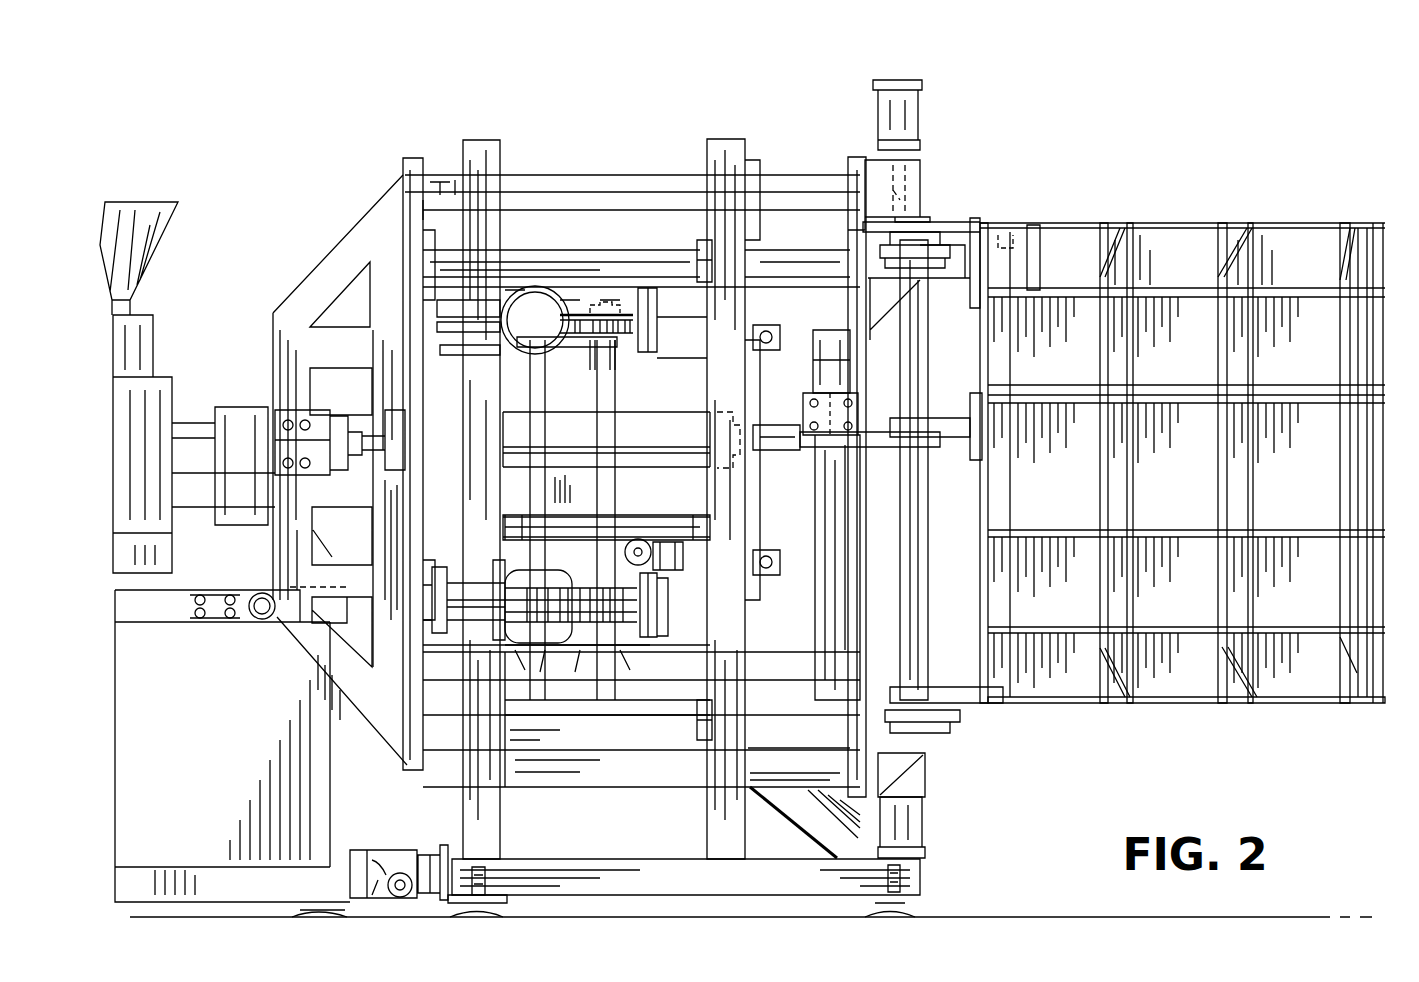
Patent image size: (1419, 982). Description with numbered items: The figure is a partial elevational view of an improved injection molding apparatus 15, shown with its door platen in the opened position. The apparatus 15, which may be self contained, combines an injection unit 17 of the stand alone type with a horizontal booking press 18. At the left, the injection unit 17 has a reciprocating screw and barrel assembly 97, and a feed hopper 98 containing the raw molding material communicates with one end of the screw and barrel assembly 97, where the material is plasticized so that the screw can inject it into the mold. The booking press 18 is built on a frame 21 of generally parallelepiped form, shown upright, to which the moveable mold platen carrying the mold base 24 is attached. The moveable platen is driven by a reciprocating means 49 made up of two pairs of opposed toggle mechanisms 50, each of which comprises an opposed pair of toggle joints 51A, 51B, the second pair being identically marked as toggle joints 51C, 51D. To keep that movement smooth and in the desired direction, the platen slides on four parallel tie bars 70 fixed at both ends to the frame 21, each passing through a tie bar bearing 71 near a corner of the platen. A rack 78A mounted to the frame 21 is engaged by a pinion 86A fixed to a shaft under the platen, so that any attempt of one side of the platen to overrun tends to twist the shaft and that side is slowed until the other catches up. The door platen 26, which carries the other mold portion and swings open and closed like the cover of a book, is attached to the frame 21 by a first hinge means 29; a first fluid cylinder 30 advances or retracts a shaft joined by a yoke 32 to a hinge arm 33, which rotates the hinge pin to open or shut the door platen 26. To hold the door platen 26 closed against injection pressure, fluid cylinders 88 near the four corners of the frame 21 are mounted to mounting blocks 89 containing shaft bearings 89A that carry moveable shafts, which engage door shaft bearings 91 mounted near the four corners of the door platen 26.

The injection molding apparatus 15 is at (990, 123).
The injection unit 17 is at (150, 300).
The horizontal booking press 18 is at (622, 172).
The frame 21 is at (540, 176).
The mold base 24 is at (787, 597).
The door platen 26 is at (1275, 685).
The first hinge means 29 is at (928, 318).
The first fluid cylinder 30 is at (675, 448).
The yoke 32 is at (763, 430).
The hinge arm 33 is at (877, 442).
The reciprocating means 49 is at (584, 491).
The toggle mechanisms 50 is at (592, 353).
The toggle joint 51A is at (440, 352).
The toggle joint 51B is at (628, 344).
The toggle joint 51C is at (630, 633).
The toggle joint 51D is at (427, 632).
The tie bar 70 is at (535, 262).
The tie bar bearing 71 is at (702, 247).
The rack 78A is at (620, 535).
The pinion 86A is at (650, 562).
The fluid cylinders 88 is at (917, 117).
The mounting blocks 89 is at (922, 177).
The shaft bearings 89A is at (920, 200).
The door shaft bearings 91 is at (1020, 255).
The screw and barrel assembly 97 is at (193, 438).
The feed hopper 98 is at (157, 210).